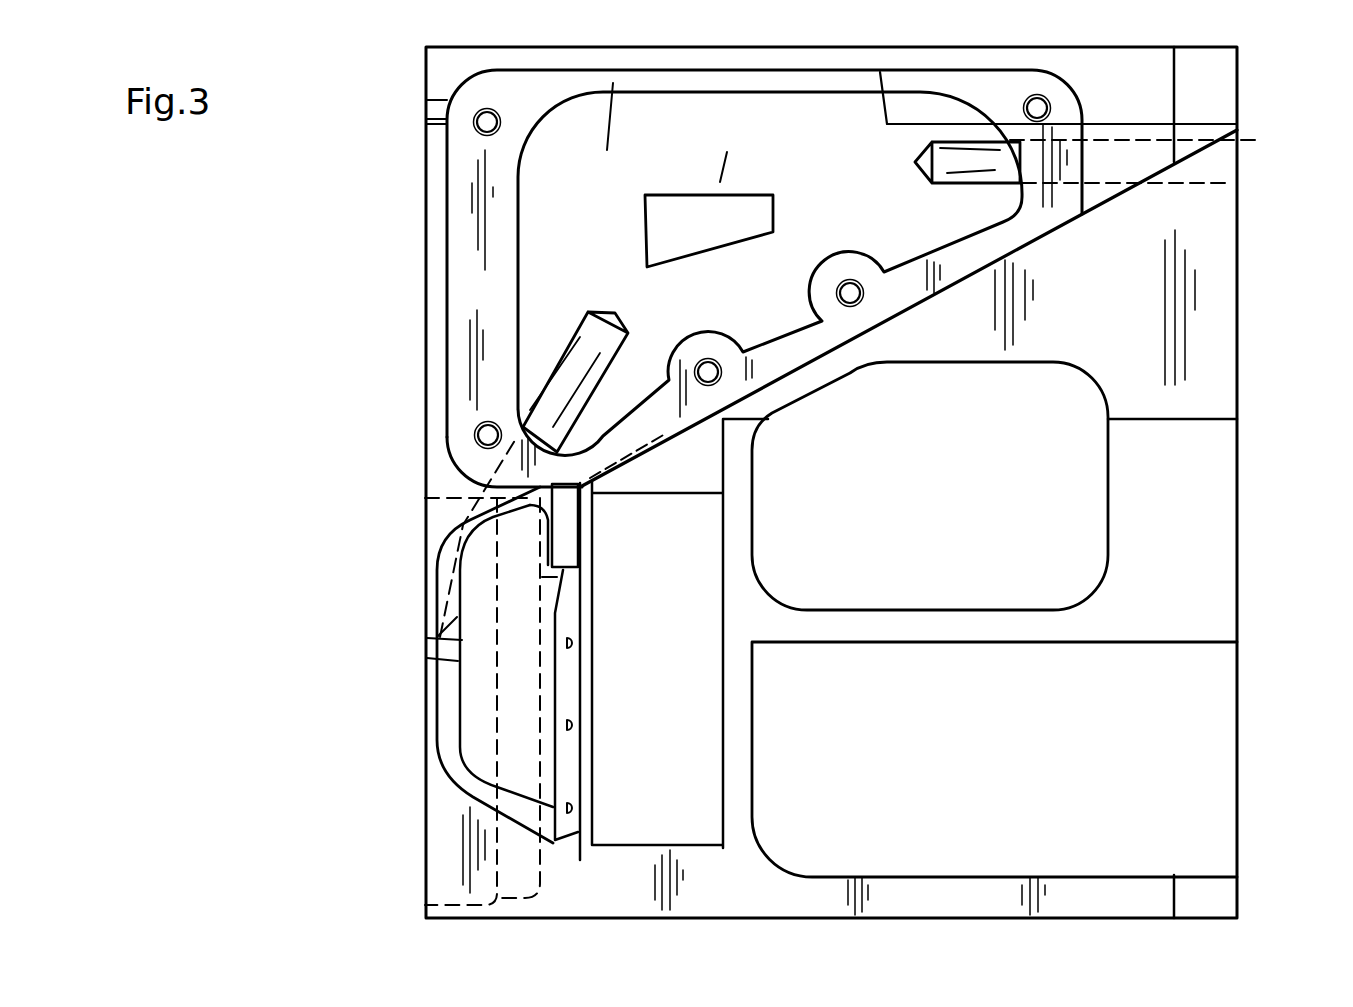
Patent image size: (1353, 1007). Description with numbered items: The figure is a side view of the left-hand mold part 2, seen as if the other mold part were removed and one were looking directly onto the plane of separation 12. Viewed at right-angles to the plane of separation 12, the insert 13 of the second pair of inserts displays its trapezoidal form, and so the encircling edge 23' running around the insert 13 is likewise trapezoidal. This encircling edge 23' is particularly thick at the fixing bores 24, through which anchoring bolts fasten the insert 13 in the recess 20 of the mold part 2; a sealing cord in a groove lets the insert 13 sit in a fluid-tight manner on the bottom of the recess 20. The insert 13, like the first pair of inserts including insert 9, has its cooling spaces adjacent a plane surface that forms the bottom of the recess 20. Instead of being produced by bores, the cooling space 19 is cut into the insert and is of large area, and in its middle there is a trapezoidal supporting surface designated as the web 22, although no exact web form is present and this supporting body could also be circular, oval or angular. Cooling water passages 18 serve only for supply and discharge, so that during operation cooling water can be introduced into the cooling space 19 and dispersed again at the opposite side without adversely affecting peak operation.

The mold part 2 is at (1145, 892).
The insert 9 is at (453, 808).
The plane of separation 12 is at (1167, 541).
The insert 13 is at (512, 88).
The cooling water passage 18 is at (995, 170).
The cooling space 19 is at (720, 182).
The recess 20 is at (1237, 127).
The web 22 is at (697, 230).
The encircling edge 23' is at (459, 179).
The fixing bore 24 is at (480, 123).